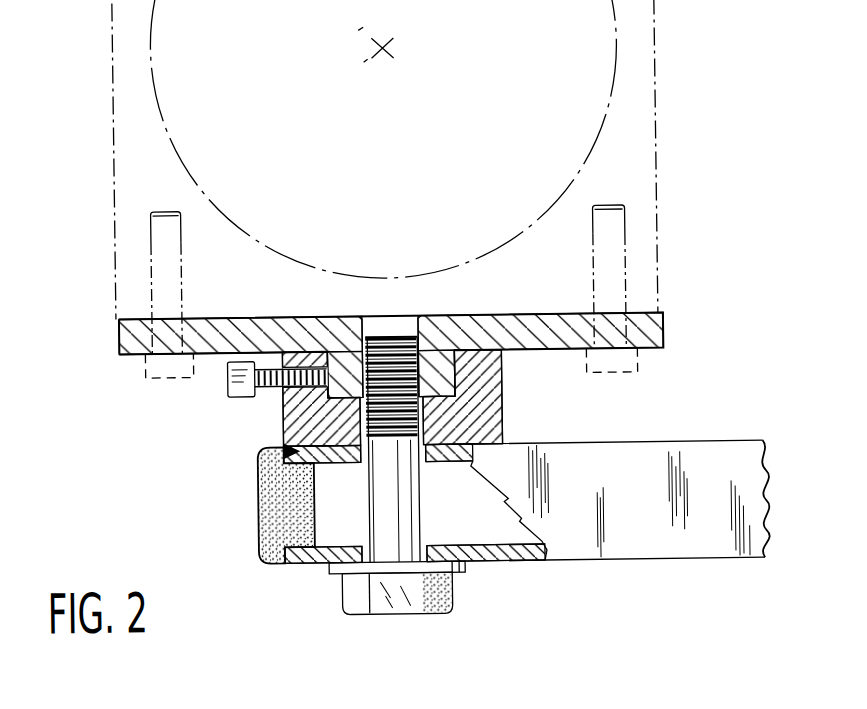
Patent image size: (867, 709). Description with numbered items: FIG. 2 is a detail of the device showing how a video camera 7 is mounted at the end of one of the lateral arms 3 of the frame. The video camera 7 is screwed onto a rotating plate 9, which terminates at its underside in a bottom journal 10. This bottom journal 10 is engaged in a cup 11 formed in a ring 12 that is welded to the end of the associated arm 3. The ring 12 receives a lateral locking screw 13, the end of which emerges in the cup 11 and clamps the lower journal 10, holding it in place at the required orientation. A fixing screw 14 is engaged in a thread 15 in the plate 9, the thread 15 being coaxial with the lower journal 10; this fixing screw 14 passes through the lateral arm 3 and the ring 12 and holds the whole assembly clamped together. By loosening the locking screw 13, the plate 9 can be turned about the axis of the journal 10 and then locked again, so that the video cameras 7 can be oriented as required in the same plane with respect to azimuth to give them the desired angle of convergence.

The lateral arm 3 is at (692, 542).
The video camera 7 is at (183, 104).
The rotating plate 9 is at (132, 333).
The bottom journal 10 is at (460, 362).
The cup 11 is at (333, 352).
The ring 12 is at (313, 427).
The lateral locking screw 13 is at (253, 375).
The fixing screw 14 is at (447, 600).
The thread 15 is at (413, 318).